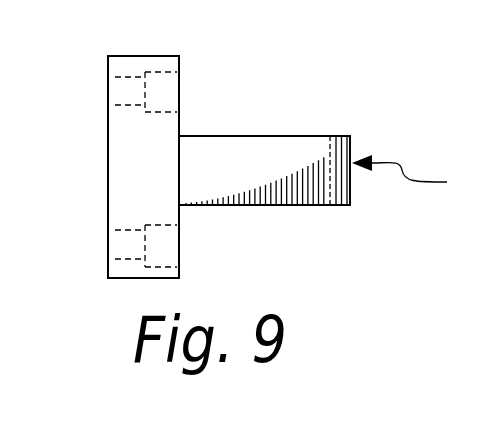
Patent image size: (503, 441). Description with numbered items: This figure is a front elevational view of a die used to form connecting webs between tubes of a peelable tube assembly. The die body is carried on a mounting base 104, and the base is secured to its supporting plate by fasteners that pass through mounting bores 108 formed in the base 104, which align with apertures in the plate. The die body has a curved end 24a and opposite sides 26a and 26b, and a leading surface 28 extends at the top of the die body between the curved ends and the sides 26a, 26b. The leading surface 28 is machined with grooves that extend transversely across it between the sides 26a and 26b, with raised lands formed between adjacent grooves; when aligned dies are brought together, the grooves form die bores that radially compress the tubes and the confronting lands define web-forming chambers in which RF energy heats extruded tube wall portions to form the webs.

The mounting base 104 is at (124, 147).
The mounting bores 108 is at (116, 77).
The curved end 24a is at (299, 190).
The side 26b is at (248, 136).
The side 26a is at (221, 206).
The leading surface 28 is at (414, 175).